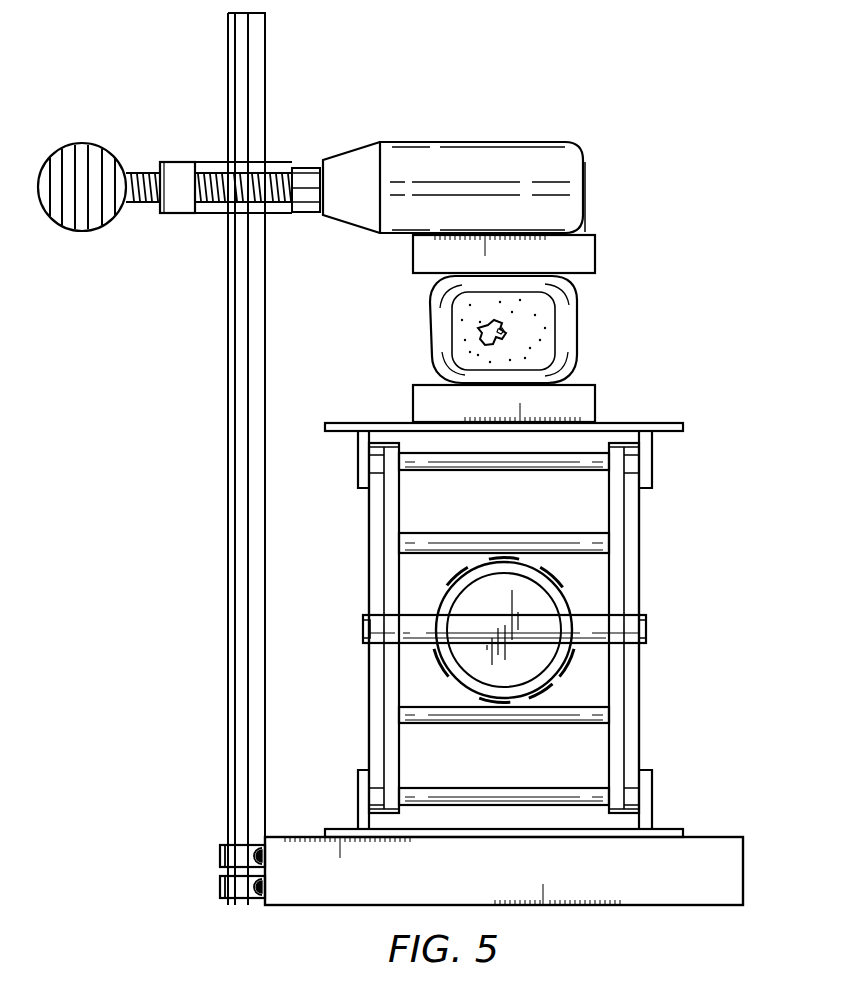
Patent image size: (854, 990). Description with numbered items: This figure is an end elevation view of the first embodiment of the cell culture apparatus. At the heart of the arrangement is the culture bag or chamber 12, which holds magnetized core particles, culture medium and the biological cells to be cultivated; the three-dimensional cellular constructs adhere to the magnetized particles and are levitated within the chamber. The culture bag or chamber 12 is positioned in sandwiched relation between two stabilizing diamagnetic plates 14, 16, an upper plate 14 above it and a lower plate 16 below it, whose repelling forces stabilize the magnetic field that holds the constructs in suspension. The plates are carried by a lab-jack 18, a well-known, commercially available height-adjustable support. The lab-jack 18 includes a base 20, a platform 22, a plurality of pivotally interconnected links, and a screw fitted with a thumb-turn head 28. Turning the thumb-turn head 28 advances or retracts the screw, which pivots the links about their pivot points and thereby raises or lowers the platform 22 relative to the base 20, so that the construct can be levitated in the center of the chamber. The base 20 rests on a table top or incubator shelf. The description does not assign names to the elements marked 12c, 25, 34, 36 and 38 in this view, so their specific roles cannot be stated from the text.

The culture bag or chamber 12 is at (556, 312).
The inclusion in sample 12c is at (466, 345).
The stabilizing diamagnetic plate 14 is at (583, 256).
The stabilizing diamagnetic plate 16 is at (583, 400).
The lab-jack 18 is at (515, 638).
The base 20 is at (358, 795).
The platform 22 is at (384, 422).
The load cell / actuator cylinder 25 is at (553, 162).
The thumb-turn head 28 is at (495, 629).
The vertical post 34 is at (228, 463).
The threaded drive nut 36 is at (142, 205).
The hand knob 38 is at (82, 229).